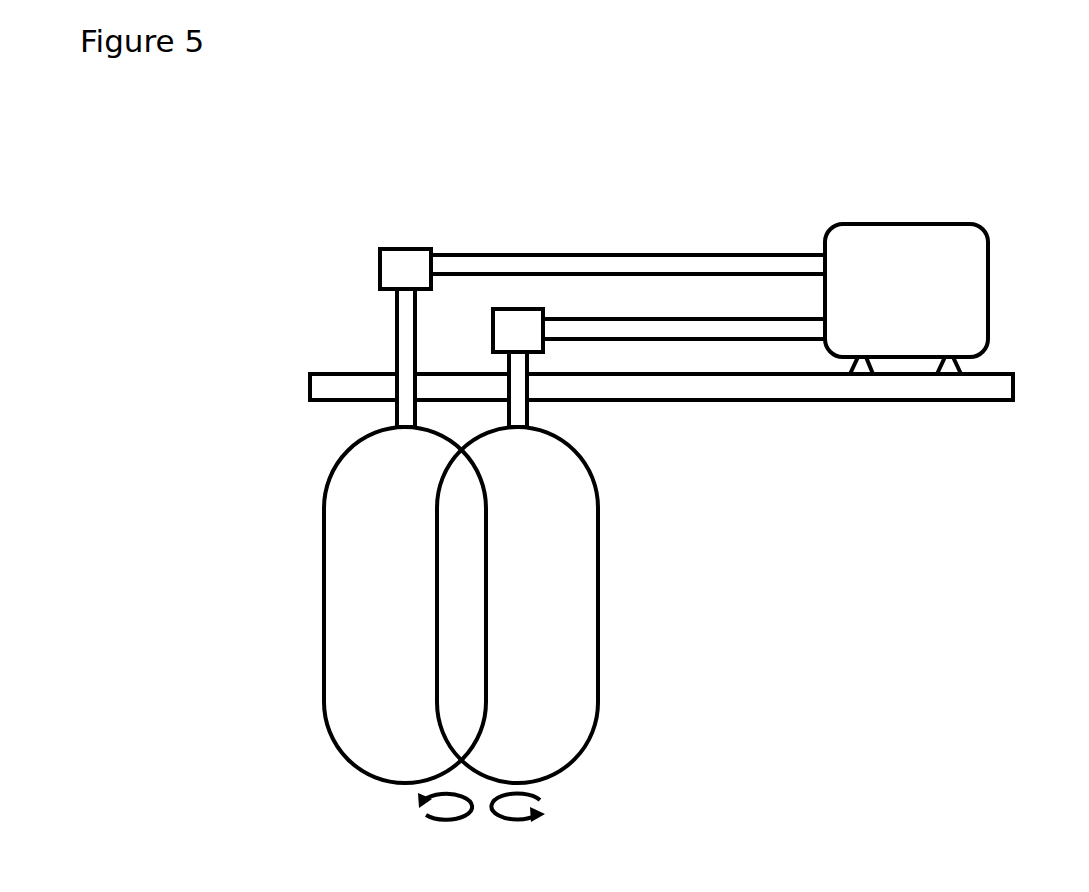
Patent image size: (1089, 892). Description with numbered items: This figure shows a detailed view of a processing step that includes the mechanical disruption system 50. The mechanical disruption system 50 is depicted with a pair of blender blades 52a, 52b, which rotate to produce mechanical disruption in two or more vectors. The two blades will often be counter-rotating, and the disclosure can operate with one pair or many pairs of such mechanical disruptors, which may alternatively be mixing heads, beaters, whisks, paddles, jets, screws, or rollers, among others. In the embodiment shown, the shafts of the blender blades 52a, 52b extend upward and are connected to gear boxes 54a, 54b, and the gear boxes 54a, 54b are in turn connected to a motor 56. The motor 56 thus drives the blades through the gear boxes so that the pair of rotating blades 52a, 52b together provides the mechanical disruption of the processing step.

The mechanical disruption system 50 is at (657, 463).
The blender blade 52a is at (330, 737).
The blender blade 52b is at (580, 737).
The gear box 54a is at (380, 268).
The gear box 54b is at (505, 318).
The motor 56 is at (988, 268).